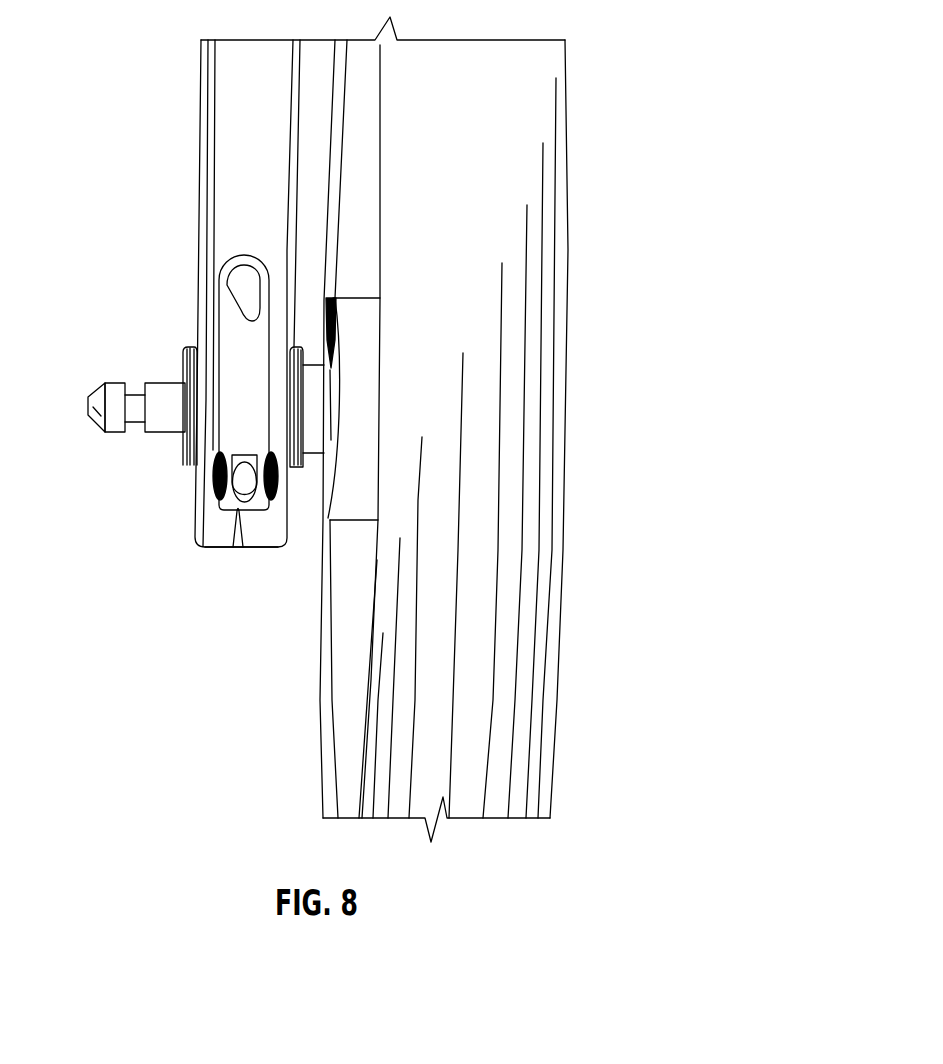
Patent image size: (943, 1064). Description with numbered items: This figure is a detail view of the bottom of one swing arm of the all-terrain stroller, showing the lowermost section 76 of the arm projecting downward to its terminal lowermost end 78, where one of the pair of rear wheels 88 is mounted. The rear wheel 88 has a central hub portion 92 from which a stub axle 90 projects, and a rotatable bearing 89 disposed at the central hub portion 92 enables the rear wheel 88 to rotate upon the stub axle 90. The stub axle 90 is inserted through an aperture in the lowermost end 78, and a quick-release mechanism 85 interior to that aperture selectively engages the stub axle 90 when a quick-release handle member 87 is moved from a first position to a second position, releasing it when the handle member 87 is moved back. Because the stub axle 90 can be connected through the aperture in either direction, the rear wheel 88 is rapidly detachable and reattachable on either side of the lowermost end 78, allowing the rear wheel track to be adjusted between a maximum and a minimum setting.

The lowermost section 76 is at (205, 183).
The lowermost end 78 is at (217, 548).
The quick-release mechanism 85 is at (204, 486).
The quick-release handle member 87 is at (240, 422).
The rear wheel 88 is at (512, 368).
The rotatable bearing 89 is at (330, 338).
The stub axle 90 is at (100, 414).
The central hub portion 92 is at (360, 412).